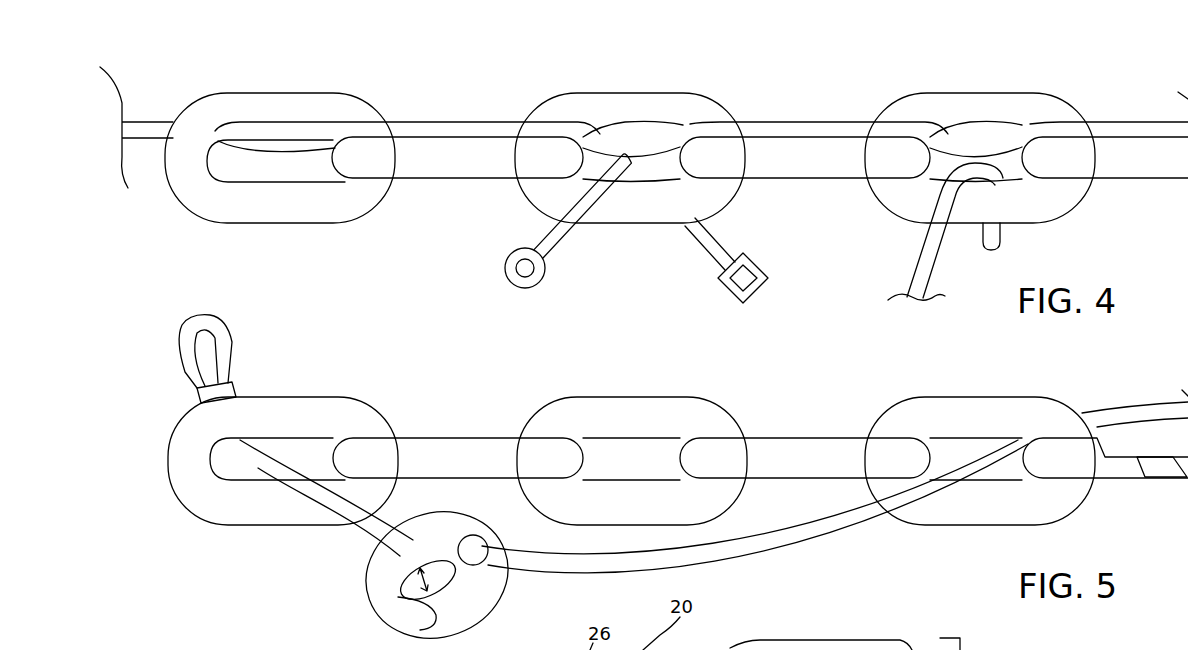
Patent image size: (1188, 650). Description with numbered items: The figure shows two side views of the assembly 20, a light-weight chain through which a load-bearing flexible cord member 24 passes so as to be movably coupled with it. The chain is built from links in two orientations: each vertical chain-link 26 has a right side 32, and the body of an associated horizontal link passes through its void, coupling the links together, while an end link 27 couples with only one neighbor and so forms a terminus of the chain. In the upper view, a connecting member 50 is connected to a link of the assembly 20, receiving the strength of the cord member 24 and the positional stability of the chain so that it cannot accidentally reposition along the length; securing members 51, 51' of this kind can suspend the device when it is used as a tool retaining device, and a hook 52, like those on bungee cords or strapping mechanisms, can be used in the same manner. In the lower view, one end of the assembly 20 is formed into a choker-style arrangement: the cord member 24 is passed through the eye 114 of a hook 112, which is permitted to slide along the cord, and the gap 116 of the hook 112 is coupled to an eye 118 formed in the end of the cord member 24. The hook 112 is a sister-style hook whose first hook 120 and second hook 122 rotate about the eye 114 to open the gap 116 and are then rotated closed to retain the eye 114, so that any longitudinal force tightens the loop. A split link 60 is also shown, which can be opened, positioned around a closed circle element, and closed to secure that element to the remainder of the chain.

In FIG. 4, the assembly 20 is at (622, 85).
In FIG. 5, the assembly 20 is at (623, 392).
In FIG. 5, the flexible cord member 24 is at (393, 518).
In FIG. 4, the vertical chain-link 26 is at (710, 93).
In FIG. 5, the vertical chain-link 26 is at (747, 647).
In FIG. 4, the end link 27 is at (273, 226).
In FIG. 5, the end link 27 is at (287, 527).
In FIG. 5, the right side 32 is at (707, 649).
In FIG. 4, the connecting member 50 is at (722, 240).
In FIG. 4, the securing member 51 is at (781, 278).
In FIG. 4, the round pin head 51' is at (568, 236).
In FIG. 4, the hook 52 is at (930, 268).
In FIG. 5, the split link 60 is at (1138, 468).
In FIG. 5, the hook 112 is at (477, 600).
In FIG. 5, the eye 114 is at (488, 540).
In FIG. 5, the gap 116 is at (405, 597).
In FIG. 5, the eye 118 is at (227, 322).
In FIG. 5, the first hook 120 is at (442, 620).
In FIG. 5, the second hook 122 is at (390, 548).